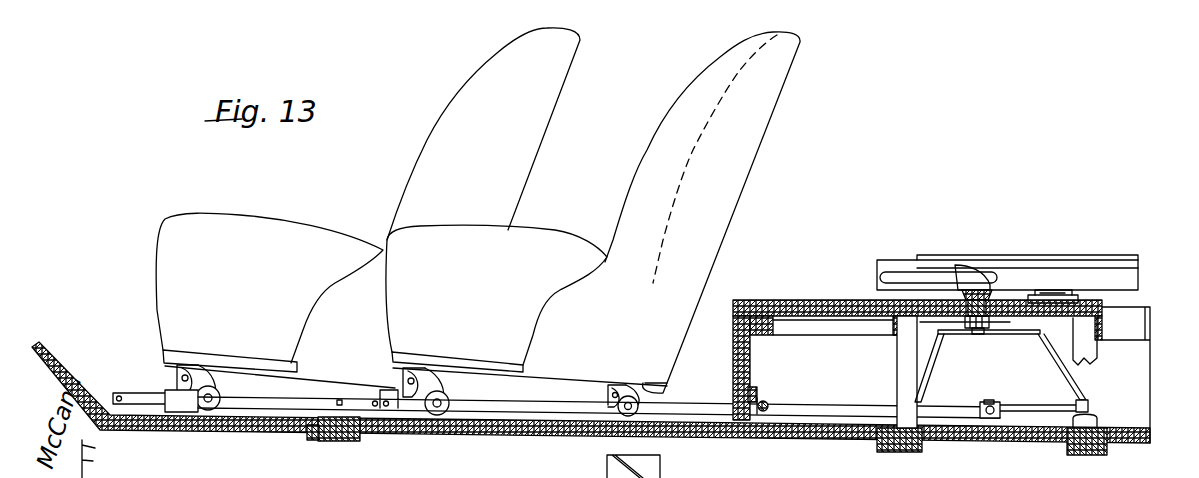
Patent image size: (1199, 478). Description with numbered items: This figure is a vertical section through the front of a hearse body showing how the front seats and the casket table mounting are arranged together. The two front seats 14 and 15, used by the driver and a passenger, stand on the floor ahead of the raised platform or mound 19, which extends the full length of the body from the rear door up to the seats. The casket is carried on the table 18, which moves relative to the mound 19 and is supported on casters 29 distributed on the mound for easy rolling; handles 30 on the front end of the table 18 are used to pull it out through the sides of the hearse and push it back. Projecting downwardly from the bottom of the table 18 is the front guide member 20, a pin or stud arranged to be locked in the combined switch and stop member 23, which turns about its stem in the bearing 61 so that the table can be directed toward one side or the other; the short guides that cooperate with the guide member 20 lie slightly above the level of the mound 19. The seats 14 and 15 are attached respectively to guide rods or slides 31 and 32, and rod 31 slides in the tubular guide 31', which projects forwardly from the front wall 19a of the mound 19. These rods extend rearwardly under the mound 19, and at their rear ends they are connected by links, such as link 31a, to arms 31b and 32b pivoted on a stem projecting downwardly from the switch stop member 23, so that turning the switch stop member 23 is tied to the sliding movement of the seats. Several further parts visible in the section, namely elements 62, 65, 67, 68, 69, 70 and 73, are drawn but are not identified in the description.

The seat 14 is at (463, 233).
The seat 15 is at (242, 220).
The table 18 is at (885, 257).
The mound 19 is at (808, 300).
The front wall of the mound 19a is at (750, 345).
The front guide member 20 is at (997, 292).
The combined switch and stop member 23 is at (943, 320).
The casters 29 is at (1060, 297).
The handles 30 is at (878, 272).
The guide rod or slide 31 is at (582, 376).
The tubular guide 31' is at (530, 373).
The link 31a is at (1033, 405).
The arm 31b is at (1048, 354).
The guide rod or slide 32 is at (128, 392).
The arm 32b is at (933, 355).
The bearing 61 is at (960, 300).
The bracket 62 is at (1010, 323).
The cone 65 is at (977, 300).
The screw 67 is at (763, 412).
The block 68 is at (755, 393).
The screw 69 is at (767, 402).
The bolt 70 is at (982, 408).
The nut 73 is at (985, 402).